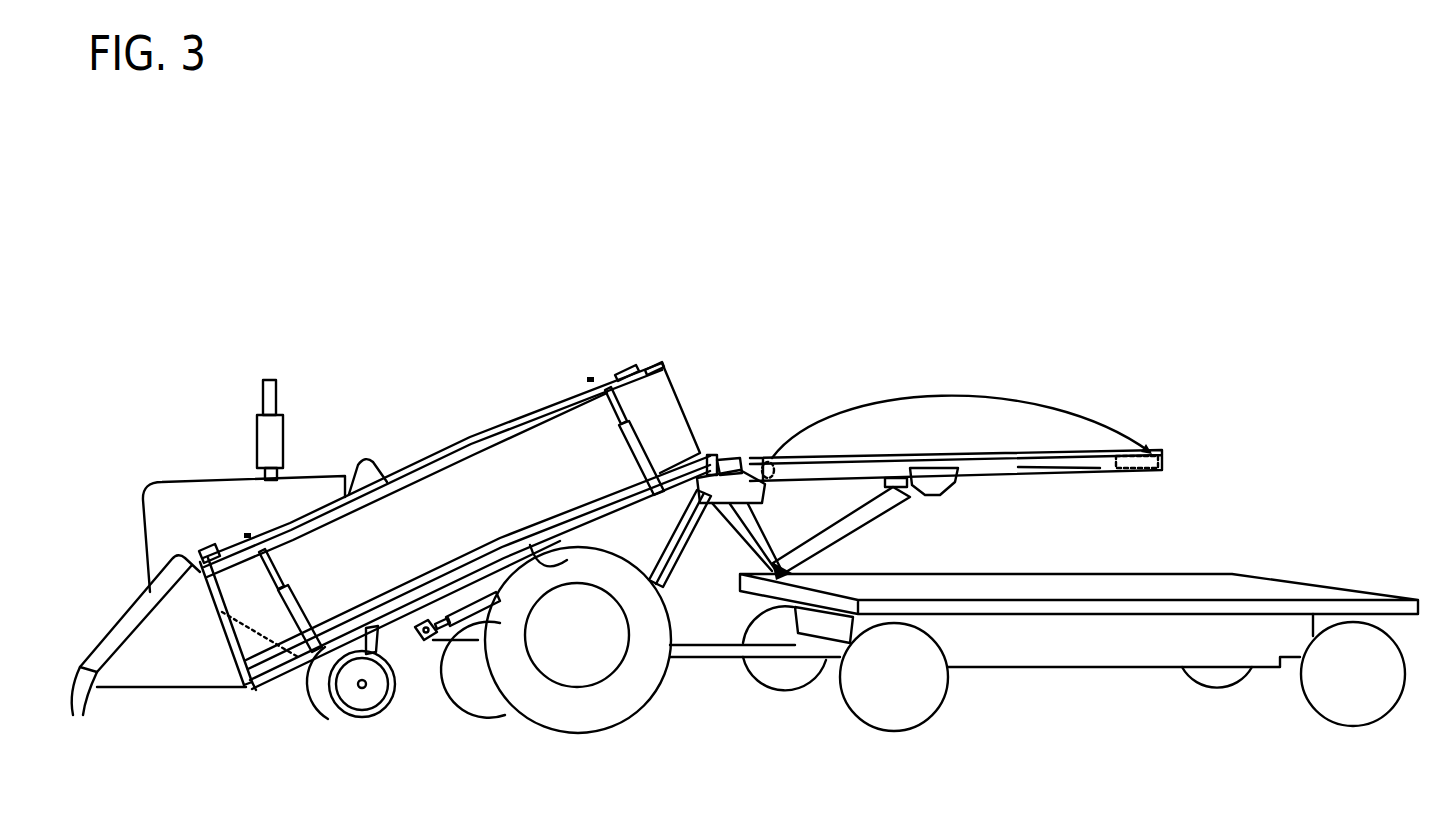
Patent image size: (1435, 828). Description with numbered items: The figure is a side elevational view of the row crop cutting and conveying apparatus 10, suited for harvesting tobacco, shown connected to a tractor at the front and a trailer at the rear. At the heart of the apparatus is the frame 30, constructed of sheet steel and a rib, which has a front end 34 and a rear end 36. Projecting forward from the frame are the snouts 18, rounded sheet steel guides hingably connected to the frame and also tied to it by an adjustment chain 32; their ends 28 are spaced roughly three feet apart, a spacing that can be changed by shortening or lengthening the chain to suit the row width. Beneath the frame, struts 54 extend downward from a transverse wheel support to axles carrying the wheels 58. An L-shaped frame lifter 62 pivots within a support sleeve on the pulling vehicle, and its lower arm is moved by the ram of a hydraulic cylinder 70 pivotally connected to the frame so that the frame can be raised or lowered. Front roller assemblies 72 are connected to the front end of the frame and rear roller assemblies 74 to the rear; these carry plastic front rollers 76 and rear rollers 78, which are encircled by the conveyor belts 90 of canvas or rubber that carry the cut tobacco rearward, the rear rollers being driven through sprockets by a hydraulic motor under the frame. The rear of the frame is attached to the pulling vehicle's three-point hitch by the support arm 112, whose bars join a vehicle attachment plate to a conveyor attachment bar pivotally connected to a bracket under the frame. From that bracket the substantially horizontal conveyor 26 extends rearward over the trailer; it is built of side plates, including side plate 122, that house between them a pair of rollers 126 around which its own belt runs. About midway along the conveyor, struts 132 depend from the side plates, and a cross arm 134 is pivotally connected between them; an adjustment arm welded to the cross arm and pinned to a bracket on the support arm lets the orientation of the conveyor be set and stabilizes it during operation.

The row crop cutting and conveying apparatus 10 is at (445, 427).
The snouts 18 is at (181, 668).
The horizontal conveyor 26 is at (987, 455).
The ends 28 is at (87, 706).
The frame 30 is at (596, 540).
The adjustment chain 32 is at (248, 685).
The front end 34 is at (262, 697).
The rear end 36 is at (724, 455).
The struts 54 is at (390, 641).
The wheels 58 is at (352, 710).
The frame lifter 62 is at (407, 625).
The hydraulic cylinder 70 is at (494, 591).
The front roller assemblies 72 is at (215, 542).
The rear roller assemblies 74 is at (664, 352).
The front rollers 76 is at (222, 568).
The rear rollers 78 is at (628, 364).
The conveyor belts 90 is at (493, 495).
The support arm 112 is at (695, 570).
The side plate 122 is at (1018, 467).
The rollers 126 is at (962, 420).
The struts 132 is at (937, 483).
The cross arm 134 is at (875, 525).